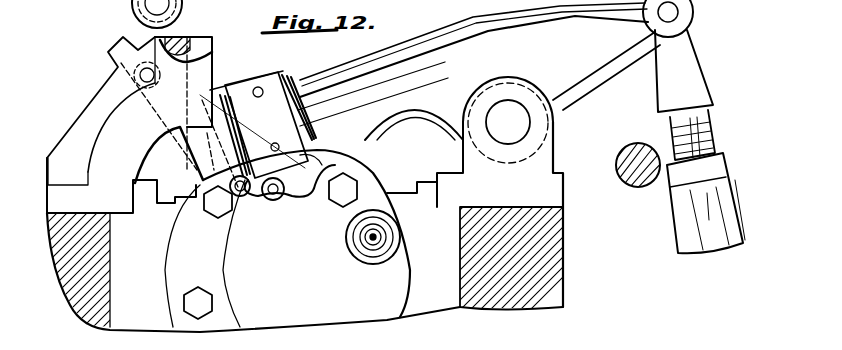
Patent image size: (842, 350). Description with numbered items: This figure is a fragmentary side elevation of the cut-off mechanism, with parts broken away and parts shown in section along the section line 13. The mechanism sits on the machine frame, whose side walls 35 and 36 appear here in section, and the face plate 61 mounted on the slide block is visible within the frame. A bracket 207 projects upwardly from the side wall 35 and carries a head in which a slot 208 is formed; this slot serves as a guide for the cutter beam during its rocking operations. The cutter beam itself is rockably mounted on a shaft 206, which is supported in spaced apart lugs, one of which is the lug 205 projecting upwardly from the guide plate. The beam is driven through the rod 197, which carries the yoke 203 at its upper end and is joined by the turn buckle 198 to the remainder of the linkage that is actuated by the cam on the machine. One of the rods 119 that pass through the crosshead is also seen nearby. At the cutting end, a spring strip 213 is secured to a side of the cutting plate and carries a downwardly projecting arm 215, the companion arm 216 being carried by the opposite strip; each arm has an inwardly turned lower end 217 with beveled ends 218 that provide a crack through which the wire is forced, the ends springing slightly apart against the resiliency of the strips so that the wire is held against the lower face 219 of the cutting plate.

The section line 13- 13 is at (198, 163).
The side wall 35 is at (72, 313).
The side wall 36 is at (556, 280).
The face plate 61 is at (388, 305).
The rod 119 is at (632, 188).
The rod 197 is at (706, 122).
The turn buckle 198 is at (718, 204).
The yoke 203 is at (688, 72).
The lug 205 is at (548, 148).
The shaft 206 is at (513, 133).
The bracket 207 is at (117, 125).
The slot 208 is at (201, 37).
The spring strip 213 is at (313, 114).
The arm 215 is at (243, 197).
The arm 216 is at (335, 168).
The inwardly turned lower end 217 is at (297, 207).
The beveled end 218 is at (283, 170).
The lower face 219 is at (263, 116).